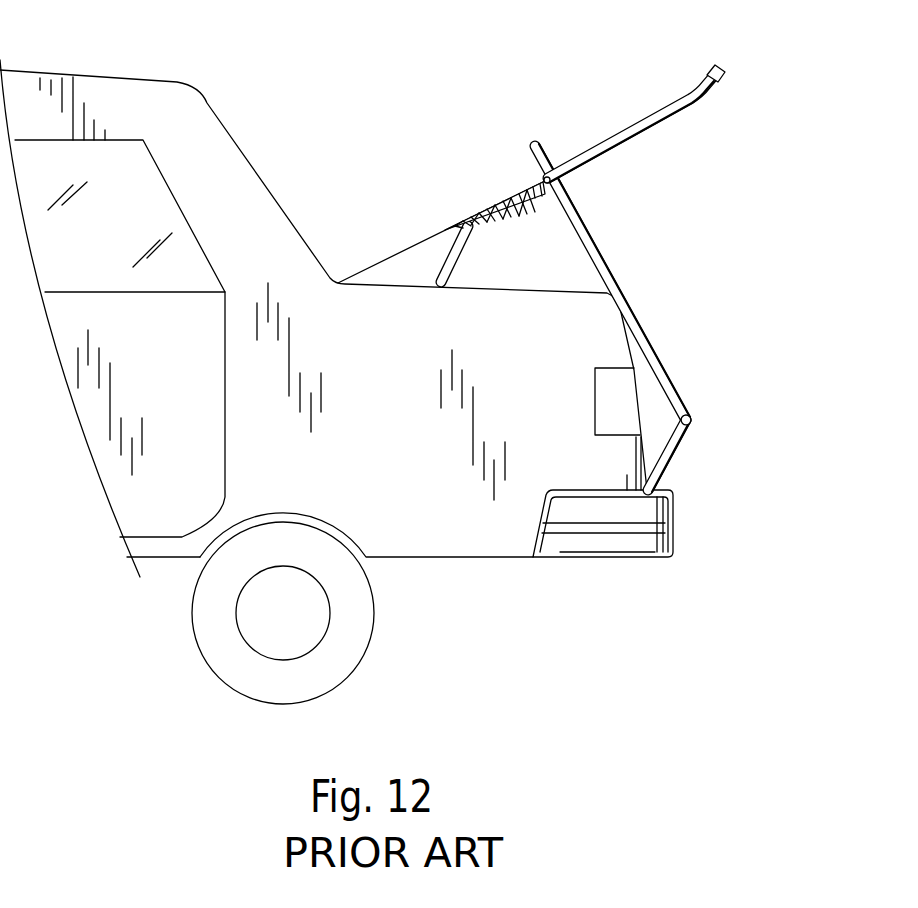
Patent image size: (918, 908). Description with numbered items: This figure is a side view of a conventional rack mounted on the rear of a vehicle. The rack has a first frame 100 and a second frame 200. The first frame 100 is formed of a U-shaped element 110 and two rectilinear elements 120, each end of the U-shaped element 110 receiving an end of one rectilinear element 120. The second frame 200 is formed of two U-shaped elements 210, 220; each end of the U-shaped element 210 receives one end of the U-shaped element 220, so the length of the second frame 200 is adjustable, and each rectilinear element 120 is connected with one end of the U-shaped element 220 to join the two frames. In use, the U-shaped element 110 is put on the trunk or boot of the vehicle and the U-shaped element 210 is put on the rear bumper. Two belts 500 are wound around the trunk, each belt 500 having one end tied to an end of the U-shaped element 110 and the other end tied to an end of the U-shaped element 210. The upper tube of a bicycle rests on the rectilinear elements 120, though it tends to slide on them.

The first frame 100 is at (585, 123).
The U-shaped element 110 is at (453, 250).
The rectilinear element 120 is at (667, 115).
The second frame 200 is at (660, 318).
The U-shaped element 210 is at (690, 443).
The U-shaped element 220 is at (573, 218).
The belt 500 is at (412, 242).